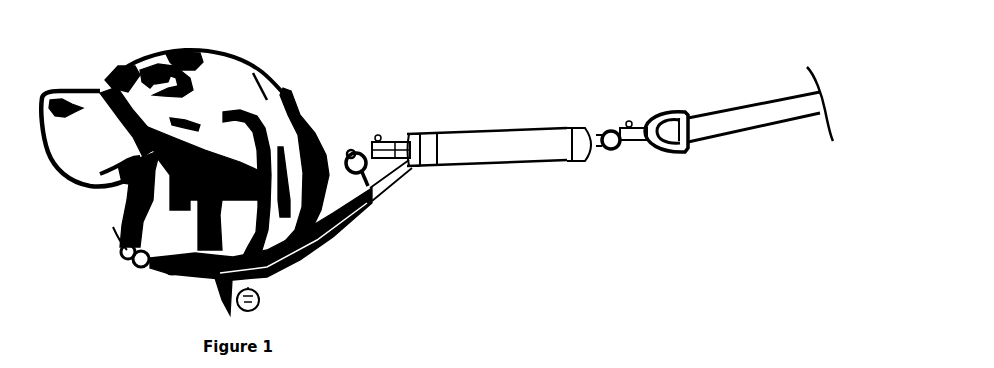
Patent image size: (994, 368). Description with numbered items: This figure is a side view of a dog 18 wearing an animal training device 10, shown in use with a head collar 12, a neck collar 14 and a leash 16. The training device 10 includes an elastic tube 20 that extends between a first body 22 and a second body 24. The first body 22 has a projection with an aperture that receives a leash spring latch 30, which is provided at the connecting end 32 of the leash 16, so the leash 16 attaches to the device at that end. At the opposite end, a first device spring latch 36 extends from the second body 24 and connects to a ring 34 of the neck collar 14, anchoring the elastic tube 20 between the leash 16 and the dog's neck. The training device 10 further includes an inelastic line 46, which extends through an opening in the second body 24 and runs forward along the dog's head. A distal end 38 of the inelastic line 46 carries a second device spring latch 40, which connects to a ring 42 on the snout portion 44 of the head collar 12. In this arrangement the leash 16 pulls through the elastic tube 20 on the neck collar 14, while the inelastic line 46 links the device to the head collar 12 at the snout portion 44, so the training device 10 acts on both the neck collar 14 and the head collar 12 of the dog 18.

The animal training device 10 is at (487, 102).
The head collar 12 is at (120, 200).
The neck collar 14 is at (297, 277).
The leash 16 is at (760, 118).
The dog 18 is at (232, 60).
The elastic tube 20 is at (497, 147).
The first body 22 is at (582, 145).
The second body 24 is at (433, 153).
The leash spring latch 30 is at (625, 150).
The connecting end 32 is at (705, 117).
The ring 34 is at (345, 173).
The first device spring latch 36 is at (385, 140).
The distal end 38 is at (202, 283).
The second device spring latch 40 is at (160, 273).
The ring 42 is at (120, 250).
The snout portion 44 is at (107, 83).
The inelastic line 46 is at (370, 207).